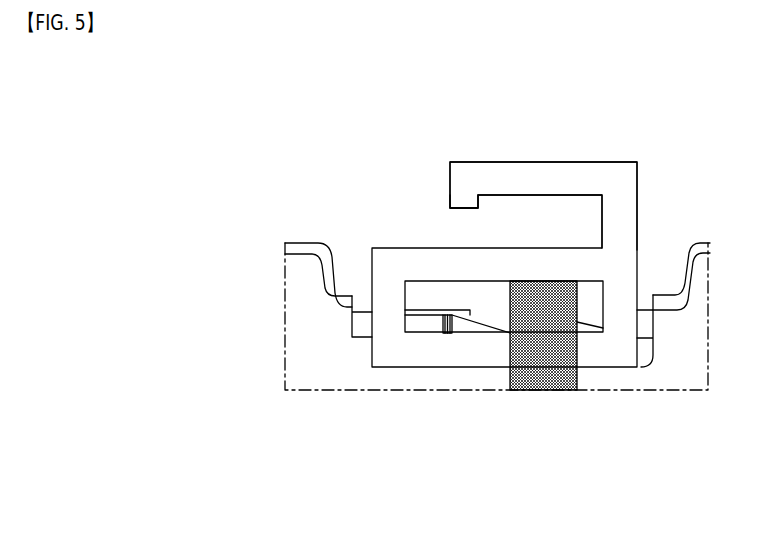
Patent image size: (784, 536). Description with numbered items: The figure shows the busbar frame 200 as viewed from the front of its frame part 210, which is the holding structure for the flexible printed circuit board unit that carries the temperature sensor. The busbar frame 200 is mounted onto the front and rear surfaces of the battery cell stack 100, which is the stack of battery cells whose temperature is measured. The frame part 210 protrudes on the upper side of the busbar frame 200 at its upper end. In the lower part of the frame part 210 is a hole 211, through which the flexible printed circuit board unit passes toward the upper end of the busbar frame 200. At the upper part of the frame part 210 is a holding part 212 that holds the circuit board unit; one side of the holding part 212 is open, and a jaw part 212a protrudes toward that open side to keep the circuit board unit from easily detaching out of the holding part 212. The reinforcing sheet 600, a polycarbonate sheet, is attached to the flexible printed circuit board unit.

The battery cell stack 100 is at (423, 311).
The busbar frame 200 is at (303, 373).
The frame part 210 is at (655, 152).
The hole 211 is at (495, 315).
The holding part 212 is at (539, 228).
The jaw part 212a is at (458, 208).
The reinforcing sheet 600 is at (550, 370).